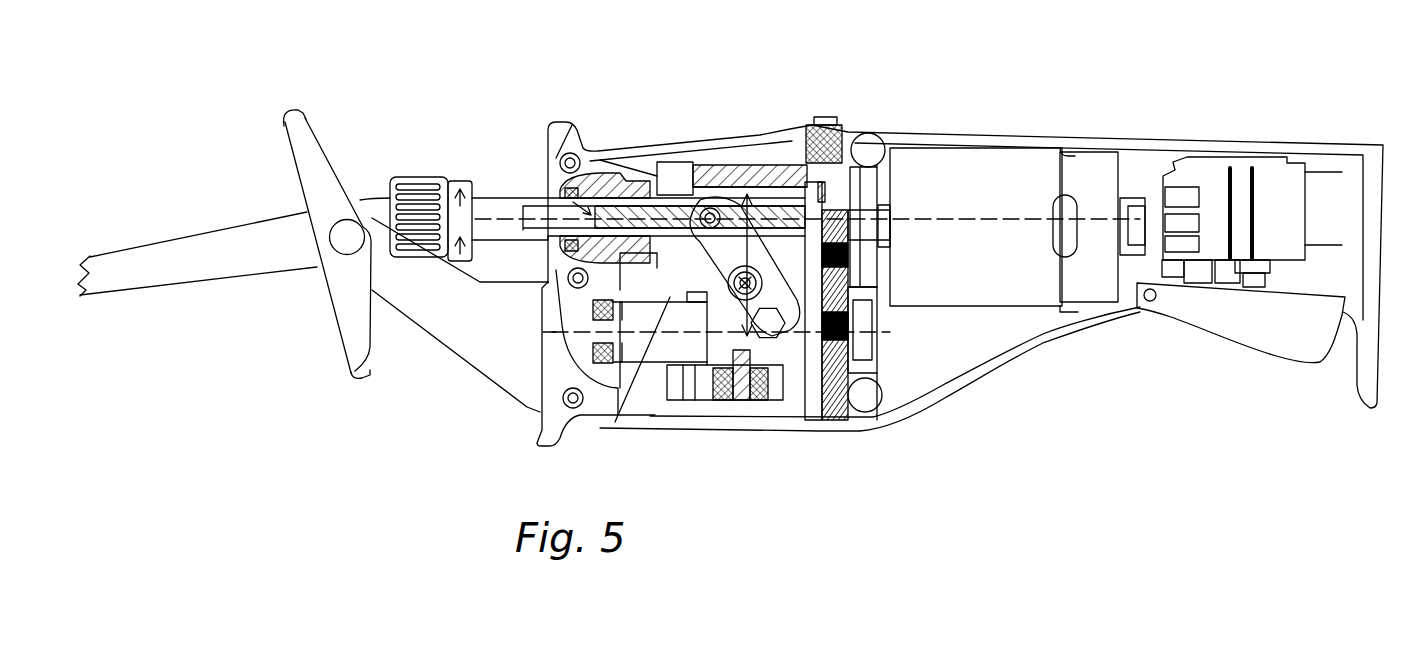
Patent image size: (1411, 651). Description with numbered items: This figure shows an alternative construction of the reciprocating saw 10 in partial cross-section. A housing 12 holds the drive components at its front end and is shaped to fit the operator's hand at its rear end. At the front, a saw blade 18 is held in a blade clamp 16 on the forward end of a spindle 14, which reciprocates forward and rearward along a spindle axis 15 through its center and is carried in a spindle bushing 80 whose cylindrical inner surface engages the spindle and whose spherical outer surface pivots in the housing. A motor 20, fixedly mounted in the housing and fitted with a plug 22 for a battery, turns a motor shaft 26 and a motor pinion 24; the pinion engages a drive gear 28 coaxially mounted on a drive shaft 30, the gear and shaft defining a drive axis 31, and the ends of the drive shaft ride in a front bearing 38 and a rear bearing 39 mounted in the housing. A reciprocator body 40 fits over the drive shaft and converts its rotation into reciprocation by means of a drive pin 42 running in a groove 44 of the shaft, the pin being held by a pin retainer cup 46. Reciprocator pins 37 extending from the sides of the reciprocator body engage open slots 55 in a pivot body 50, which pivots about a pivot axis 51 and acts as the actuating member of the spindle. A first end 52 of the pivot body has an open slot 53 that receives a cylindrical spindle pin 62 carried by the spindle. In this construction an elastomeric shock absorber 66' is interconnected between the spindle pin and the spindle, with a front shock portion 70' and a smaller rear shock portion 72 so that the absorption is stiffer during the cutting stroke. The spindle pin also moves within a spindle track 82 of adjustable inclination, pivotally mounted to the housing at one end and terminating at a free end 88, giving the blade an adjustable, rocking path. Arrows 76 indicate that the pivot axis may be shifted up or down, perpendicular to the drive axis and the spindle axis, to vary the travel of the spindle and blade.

The reciprocating saw 10 is at (609, 44).
The housing 12 is at (1195, 142).
The spindle 14 is at (533, 200).
The spindle axis 15 is at (935, 219).
The blade clamp 16 is at (419, 178).
The saw blade 18 is at (91, 256).
The motor 20 is at (1022, 148).
The plug 22 is at (1323, 172).
The motor pinion 24 is at (845, 212).
The motor shaft 26 is at (833, 240).
The drive gear 28 is at (820, 405).
The drive shaft 30 is at (618, 415).
The drive axis 31 is at (553, 333).
The reciprocator pins 37 is at (850, 333).
The front bearing 38 is at (593, 304).
The rear bearing 39 is at (865, 351).
The reciprocator body 40 is at (768, 385).
The drive pin 42 is at (742, 385).
The groove 44 is at (661, 357).
The pin retainer cup 46 is at (705, 385).
The pivot body 50 is at (720, 262).
The pivot axis 51 is at (757, 280).
The first end 52 is at (750, 190).
The open slot 53 is at (697, 203).
The open slot 55 is at (830, 278).
The spindle pin 62 is at (709, 208).
The shock absorber 66' is at (538, 105).
The front shock portion 70' is at (541, 235).
The rear shock portion 72 is at (697, 238).
The arrows 76 is at (781, 187).
The spindle bushing 80 is at (603, 173).
The spindle track 82 is at (728, 190).
The free end 88 is at (692, 200).